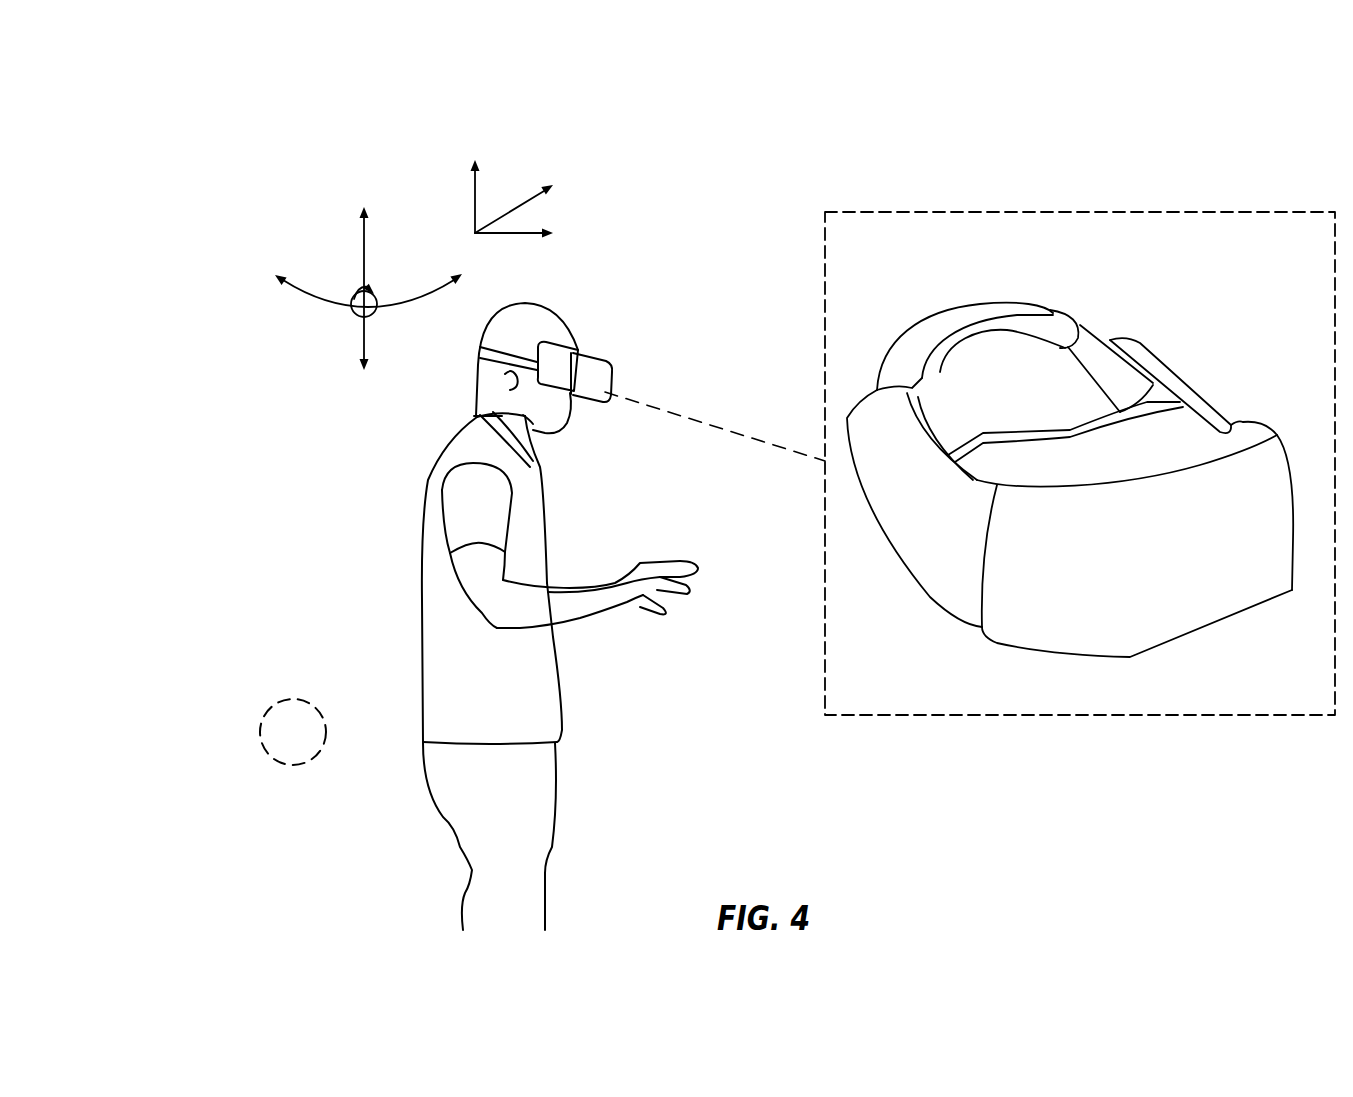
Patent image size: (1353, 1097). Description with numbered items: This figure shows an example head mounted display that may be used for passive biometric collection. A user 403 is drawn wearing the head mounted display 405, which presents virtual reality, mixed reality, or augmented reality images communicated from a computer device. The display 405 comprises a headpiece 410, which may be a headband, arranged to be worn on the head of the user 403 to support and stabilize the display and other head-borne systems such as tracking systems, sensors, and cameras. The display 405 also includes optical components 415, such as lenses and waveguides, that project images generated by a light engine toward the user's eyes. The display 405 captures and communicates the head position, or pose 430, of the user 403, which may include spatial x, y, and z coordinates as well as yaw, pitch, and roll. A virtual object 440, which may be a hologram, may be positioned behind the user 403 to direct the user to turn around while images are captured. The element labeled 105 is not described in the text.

The pose 430 is at (306, 161).
The virtual object 440 is at (306, 701).
The user 403 is at (547, 503).
The head mounted display 405 is at (613, 377).
The headpiece 410 is at (1048, 312).
The optical components 415 is at (1030, 430).
The head-mounted display strap 105 is at (1212, 401).